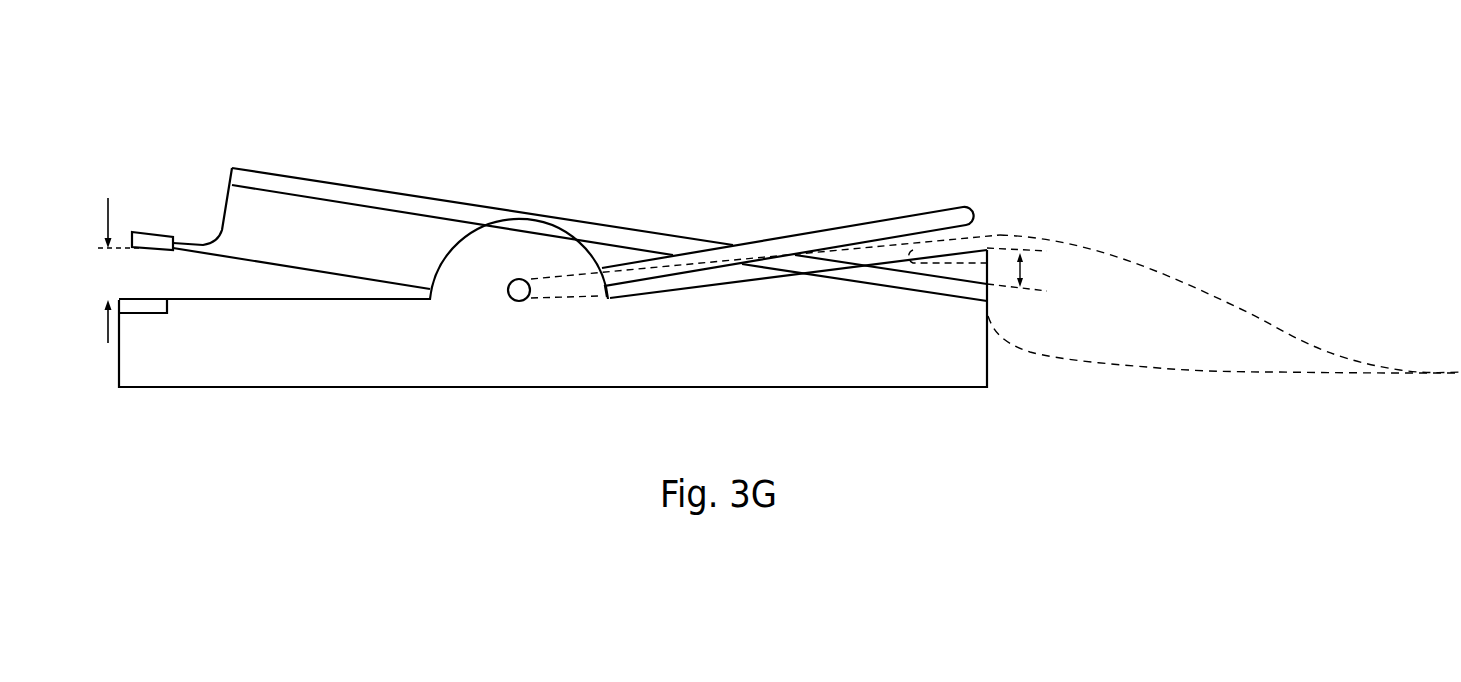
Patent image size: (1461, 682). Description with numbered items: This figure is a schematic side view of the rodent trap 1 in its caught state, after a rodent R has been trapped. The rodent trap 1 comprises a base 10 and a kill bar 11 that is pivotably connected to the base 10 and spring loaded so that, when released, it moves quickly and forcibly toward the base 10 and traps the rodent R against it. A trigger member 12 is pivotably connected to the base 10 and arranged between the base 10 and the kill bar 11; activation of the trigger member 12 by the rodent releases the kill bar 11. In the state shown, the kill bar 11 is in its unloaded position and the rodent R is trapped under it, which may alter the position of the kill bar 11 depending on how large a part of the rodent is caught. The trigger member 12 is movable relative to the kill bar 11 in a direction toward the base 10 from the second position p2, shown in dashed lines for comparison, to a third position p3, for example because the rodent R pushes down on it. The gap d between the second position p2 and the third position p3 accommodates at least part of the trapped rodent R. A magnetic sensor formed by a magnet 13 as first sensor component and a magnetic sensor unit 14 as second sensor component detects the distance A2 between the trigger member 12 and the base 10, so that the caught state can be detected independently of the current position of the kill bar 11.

The rodent trap 1 is at (1011, 42).
The base 10 is at (993, 388).
The kill bar 11 is at (828, 242).
The trigger member 12 is at (662, 232).
The magnet 13 is at (157, 236).
The magnetic sensor unit 14 is at (155, 315).
The distance between trigger member and base A2 is at (120, 253).
The gap d is at (1032, 270).
The second position p2 is at (1000, 270).
The third position p3 is at (1000, 309).
The rodent R is at (1270, 303).